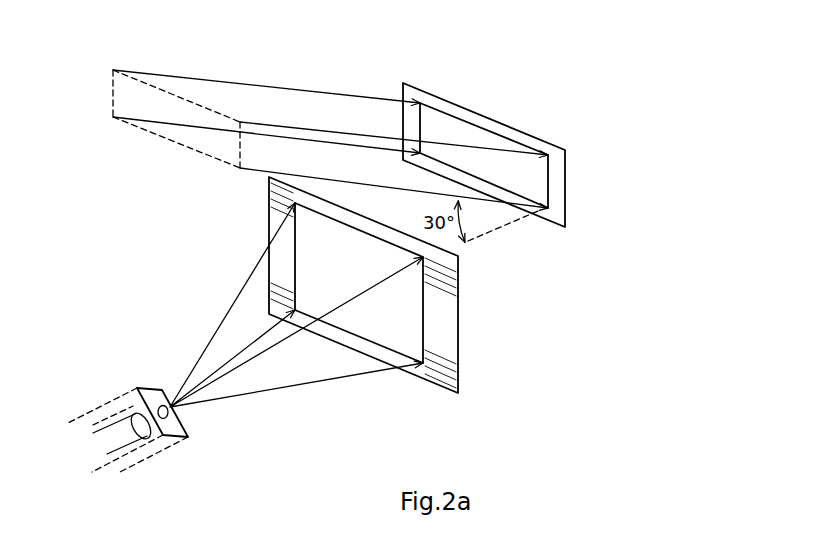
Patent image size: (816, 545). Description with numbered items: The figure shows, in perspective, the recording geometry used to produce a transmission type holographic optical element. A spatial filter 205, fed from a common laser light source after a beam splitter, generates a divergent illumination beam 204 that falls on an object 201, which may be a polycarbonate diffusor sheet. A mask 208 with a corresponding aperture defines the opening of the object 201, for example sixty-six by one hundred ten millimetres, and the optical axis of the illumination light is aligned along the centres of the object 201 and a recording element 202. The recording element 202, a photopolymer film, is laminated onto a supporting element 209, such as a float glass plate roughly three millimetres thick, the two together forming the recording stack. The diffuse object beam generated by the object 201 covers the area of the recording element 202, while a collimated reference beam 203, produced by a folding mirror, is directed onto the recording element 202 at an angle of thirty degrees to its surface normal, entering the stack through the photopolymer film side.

The object 201 is at (423, 322).
The recording element 202 is at (548, 180).
The collimated reference beam 203 is at (303, 89).
The divergent illumination beam 204 is at (226, 316).
The spatial filter 205 is at (108, 404).
The mask 208 is at (458, 303).
The supporting element 209 is at (518, 130).